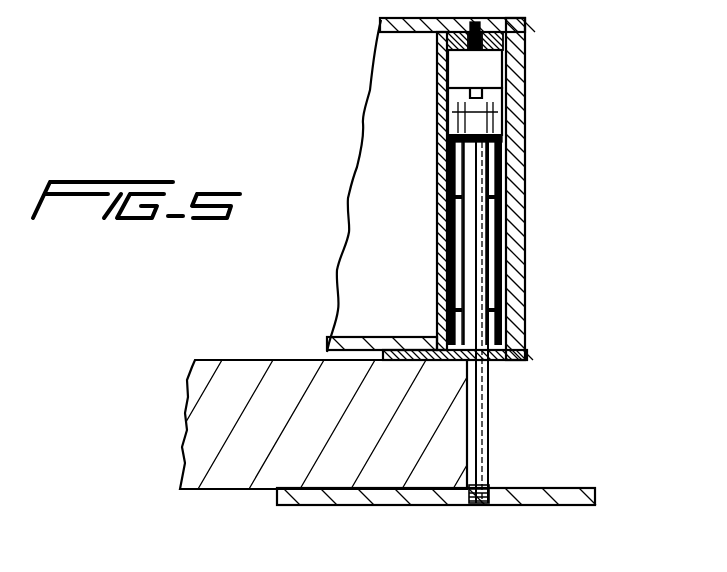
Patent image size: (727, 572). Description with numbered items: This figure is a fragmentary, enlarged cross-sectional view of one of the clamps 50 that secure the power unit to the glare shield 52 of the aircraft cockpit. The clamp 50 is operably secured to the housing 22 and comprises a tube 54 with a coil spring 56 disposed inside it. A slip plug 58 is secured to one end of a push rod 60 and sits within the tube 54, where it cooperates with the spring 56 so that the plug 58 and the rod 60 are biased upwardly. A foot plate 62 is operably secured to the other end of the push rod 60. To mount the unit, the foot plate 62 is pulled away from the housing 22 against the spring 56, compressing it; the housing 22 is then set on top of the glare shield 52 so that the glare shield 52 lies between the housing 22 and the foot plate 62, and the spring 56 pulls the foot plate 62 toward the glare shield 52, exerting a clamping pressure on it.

The housing 22 is at (378, 19).
The clamp 50 is at (544, 312).
The glare shield 52 is at (263, 372).
The tube 54 is at (511, 74).
The coil spring 56 is at (497, 203).
The slip plug 58 is at (500, 118).
The push rod 60 is at (476, 258).
The foot plate 62 is at (541, 488).